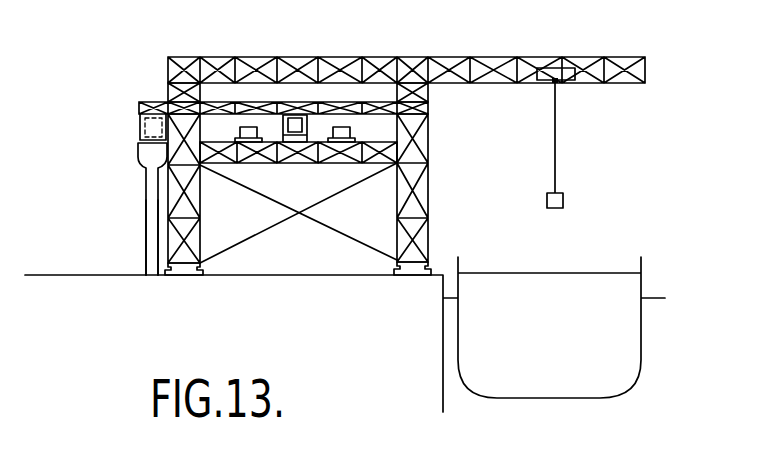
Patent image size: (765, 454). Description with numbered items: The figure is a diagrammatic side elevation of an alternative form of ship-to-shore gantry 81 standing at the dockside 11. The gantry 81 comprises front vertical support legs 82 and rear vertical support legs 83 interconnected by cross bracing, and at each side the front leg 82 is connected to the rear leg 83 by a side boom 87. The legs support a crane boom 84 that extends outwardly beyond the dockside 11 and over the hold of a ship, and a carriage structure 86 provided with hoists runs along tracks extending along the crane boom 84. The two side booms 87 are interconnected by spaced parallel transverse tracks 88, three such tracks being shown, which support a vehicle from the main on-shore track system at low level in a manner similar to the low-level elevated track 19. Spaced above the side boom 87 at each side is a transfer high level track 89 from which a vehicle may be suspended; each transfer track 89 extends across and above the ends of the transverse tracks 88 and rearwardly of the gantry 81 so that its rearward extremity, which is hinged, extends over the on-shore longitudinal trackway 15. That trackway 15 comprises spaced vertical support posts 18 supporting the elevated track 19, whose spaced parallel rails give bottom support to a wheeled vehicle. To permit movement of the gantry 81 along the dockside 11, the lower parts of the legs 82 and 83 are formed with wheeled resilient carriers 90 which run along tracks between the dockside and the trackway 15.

The dockside 11 is at (441, 272).
The longitudinal trackway 15 is at (115, 194).
The vertical support post 18 is at (152, 243).
The elevated track 19 is at (138, 150).
The gantry 81 is at (392, 165).
The front vertical support leg 82 is at (420, 143).
The rear vertical support leg 83 is at (194, 246).
The crane boom 84 is at (481, 60).
The carriage structure 86 is at (558, 70).
The side boom 87 is at (368, 156).
The transverse track 88 is at (292, 147).
The transfer high level track 89 is at (218, 108).
The wheeled resilient carrier 90 is at (186, 277).